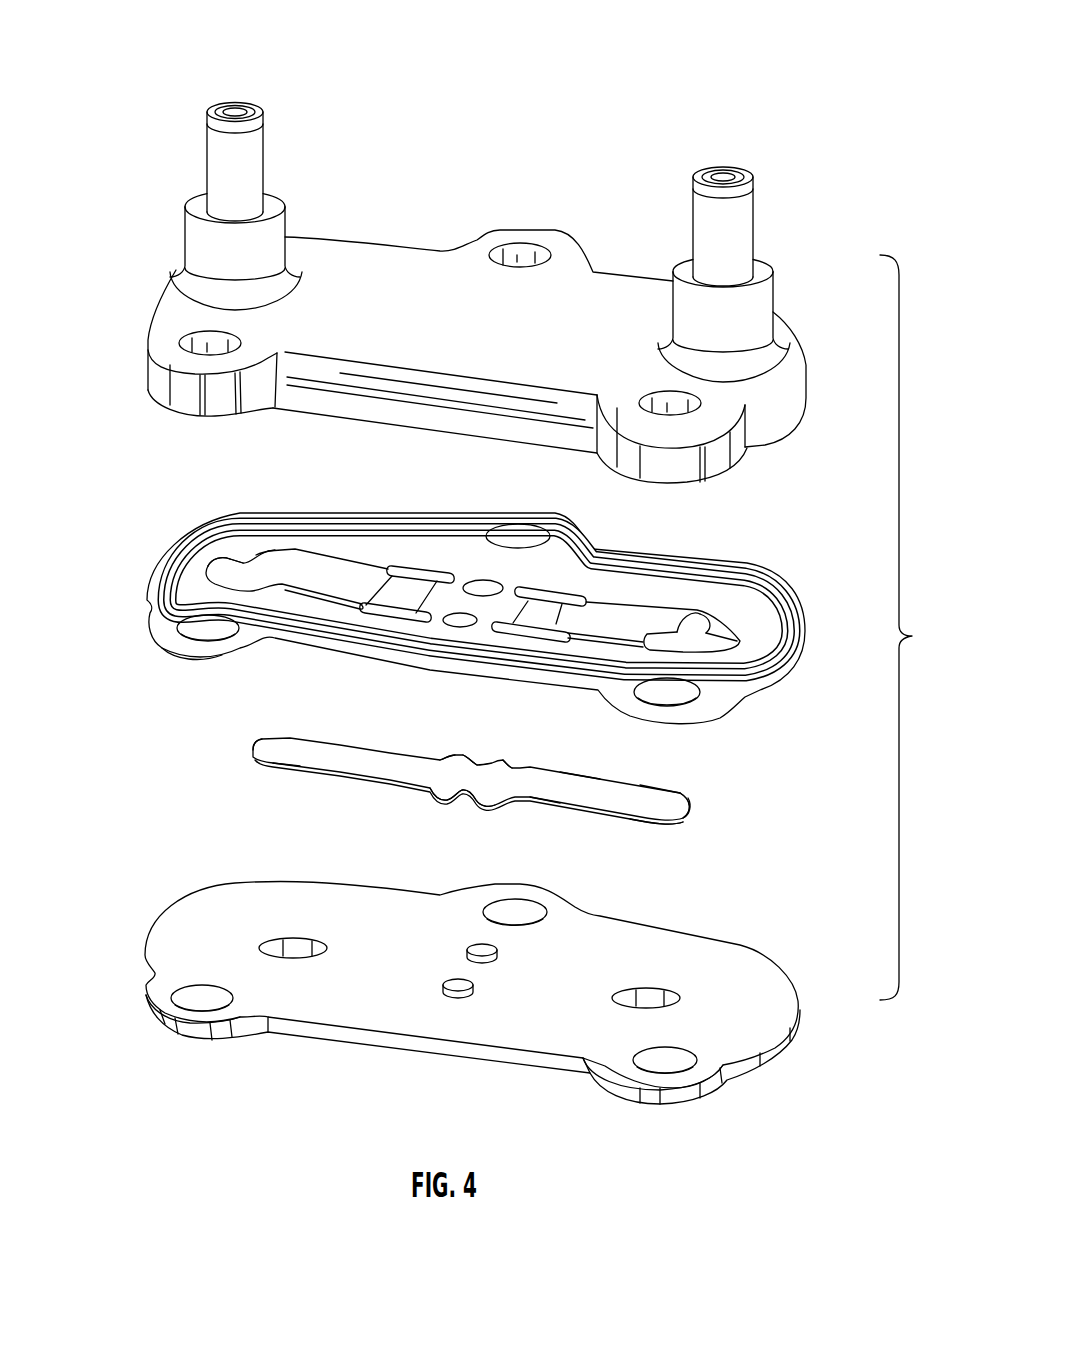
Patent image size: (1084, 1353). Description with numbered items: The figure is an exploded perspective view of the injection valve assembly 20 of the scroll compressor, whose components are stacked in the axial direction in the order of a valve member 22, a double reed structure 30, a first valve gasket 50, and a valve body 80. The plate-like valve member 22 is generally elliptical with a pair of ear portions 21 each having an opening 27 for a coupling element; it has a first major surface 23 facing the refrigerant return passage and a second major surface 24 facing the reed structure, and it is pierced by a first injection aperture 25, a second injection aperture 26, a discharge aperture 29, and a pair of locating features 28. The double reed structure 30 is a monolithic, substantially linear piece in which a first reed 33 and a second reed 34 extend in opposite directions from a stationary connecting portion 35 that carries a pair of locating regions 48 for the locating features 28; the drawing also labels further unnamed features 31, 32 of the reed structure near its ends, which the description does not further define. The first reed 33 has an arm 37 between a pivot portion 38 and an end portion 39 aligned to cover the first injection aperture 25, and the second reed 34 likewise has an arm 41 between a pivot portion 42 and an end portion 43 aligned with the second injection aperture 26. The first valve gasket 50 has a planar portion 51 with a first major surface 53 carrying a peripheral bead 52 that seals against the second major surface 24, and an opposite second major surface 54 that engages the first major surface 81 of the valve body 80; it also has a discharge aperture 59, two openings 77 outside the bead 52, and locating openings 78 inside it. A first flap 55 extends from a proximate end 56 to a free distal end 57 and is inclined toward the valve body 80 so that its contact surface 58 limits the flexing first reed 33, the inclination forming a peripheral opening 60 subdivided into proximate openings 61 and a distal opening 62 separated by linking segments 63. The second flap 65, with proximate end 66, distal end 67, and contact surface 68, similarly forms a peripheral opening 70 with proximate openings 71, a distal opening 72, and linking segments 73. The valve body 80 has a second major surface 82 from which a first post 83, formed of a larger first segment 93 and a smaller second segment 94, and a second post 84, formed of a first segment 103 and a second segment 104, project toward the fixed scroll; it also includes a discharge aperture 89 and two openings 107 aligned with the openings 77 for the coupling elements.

The valve assembly 20 is at (911, 627).
The valve body 80 is at (453, 251).
The first major surface 81 is at (485, 346).
The second major surface 82 is at (590, 297).
The first post 83 is at (201, 165).
The second post 84 is at (749, 234).
The discharge aperture 89 is at (520, 255).
The first segment 93 is at (185, 240).
The second segment 94 is at (207, 152).
The first segment 103 is at (773, 298).
The second segment 104 is at (753, 220).
The openings 107 is at (208, 345).
The first valve gasket 50 is at (452, 608).
The planar portion 51 is at (476, 608).
The bead 52 is at (447, 665).
The first major surface 53 is at (765, 680).
The second major surface 54 is at (723, 613).
The first flap 55 is at (276, 545).
The proximate end 56 is at (425, 594).
The distal end 57 is at (270, 558).
The contact surface 58 is at (185, 613).
The discharge aperture 59 is at (518, 536).
The peripheral opening 60 is at (220, 559).
The proximate openings 61 is at (412, 573).
The distal opening 62 is at (240, 563).
The linking segments 63 is at (295, 588).
The second flap 65 is at (718, 629).
The proximate end 66 is at (540, 609).
The distal end 67 is at (688, 620).
The contact surface 68 is at (727, 633).
The peripheral opening 70 is at (764, 648).
The proximate openings 71 is at (570, 597).
The distal opening 72 is at (733, 644).
The linking segments 73 is at (627, 647).
The openings 77 is at (200, 630).
The locating openings 78 is at (461, 597).
The double reed structure 30 is at (449, 769).
The spring bottom edge 31 is at (686, 820).
The spring second end 32 is at (694, 789).
The first reed 33 is at (271, 732).
The second reed 34 is at (660, 790).
The connecting portion 35 is at (511, 764).
The arm 37 is at (307, 750).
The pivot portion 38 is at (430, 772).
The end portion 39 is at (262, 748).
The arm 41 is at (585, 790).
The pivot portion 42 is at (527, 783).
The end portion 43 is at (684, 808).
The locating regions 48 is at (479, 765).
The valve member 22 is at (427, 1017).
The ear portions 21 is at (163, 1025).
The first major surface 23 is at (745, 1064).
The second major surface 24 is at (710, 950).
The first injection aperture 25 is at (300, 950).
The second injection aperture 26 is at (648, 1002).
The openings 27 is at (205, 995).
The locating features 28 is at (443, 987).
The discharge aperture 29 is at (518, 918).